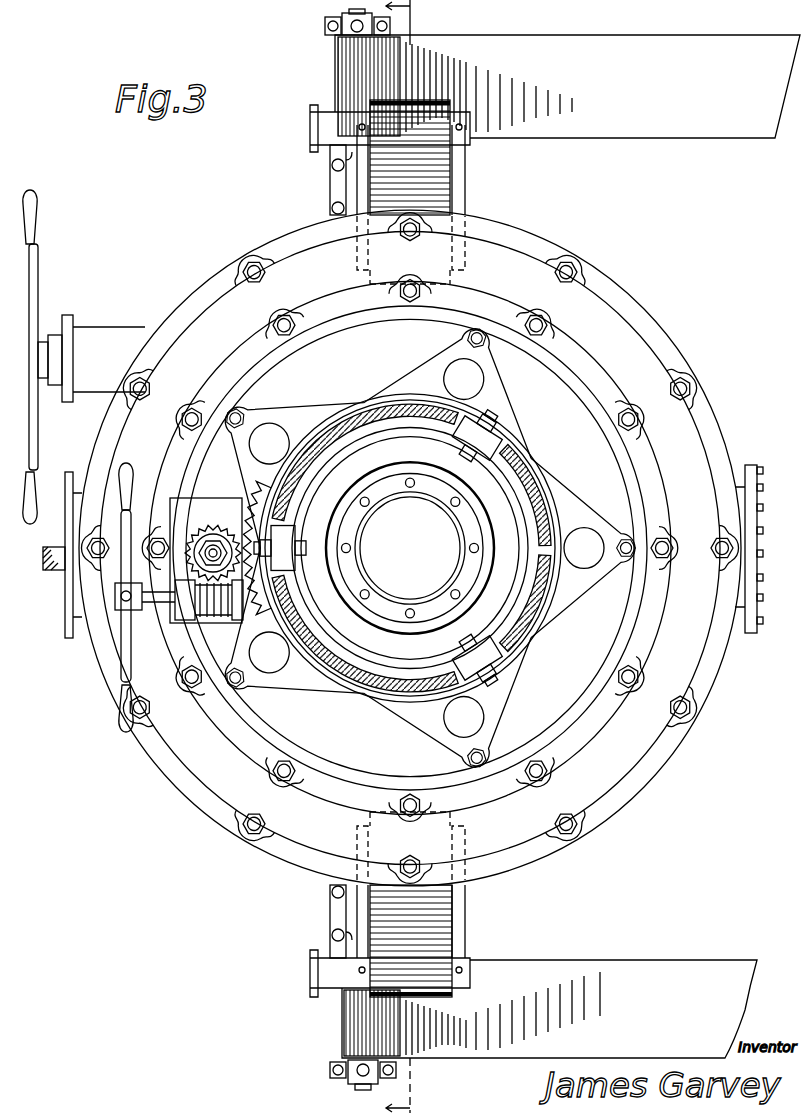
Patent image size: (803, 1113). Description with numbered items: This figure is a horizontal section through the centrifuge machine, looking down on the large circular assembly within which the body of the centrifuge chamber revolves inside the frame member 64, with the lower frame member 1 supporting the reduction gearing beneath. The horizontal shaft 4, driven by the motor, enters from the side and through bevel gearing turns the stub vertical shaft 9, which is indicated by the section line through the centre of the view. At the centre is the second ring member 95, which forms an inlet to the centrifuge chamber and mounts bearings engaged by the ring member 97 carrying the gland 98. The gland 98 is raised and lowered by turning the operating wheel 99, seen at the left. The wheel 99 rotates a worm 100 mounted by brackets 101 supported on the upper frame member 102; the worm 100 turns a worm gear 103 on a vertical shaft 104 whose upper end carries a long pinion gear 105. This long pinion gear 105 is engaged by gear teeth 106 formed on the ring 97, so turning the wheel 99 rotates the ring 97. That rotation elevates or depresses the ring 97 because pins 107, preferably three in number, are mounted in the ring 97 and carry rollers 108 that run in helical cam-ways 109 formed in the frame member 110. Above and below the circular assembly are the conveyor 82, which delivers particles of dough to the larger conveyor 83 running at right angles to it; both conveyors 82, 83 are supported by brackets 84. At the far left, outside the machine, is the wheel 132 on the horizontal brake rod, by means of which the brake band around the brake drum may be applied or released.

The lower frame member 1 is at (722, 452).
The horizontal shaft 4 is at (55, 565).
The stub vertical shaft 9 is at (423, 556).
The frame member 64 is at (640, 345).
The conveyor 82 is at (440, 191).
The larger conveyor 83 is at (603, 118).
The brackets 84 is at (343, 187).
The second ring member 95 is at (460, 532).
The ring member 97 is at (545, 500).
The gland 98 is at (389, 452).
The operating wheel 99 is at (118, 650).
The worm 100 is at (215, 620).
The brackets 101 is at (203, 496).
The upper frame member 102 is at (645, 648).
The worm gear 103 is at (215, 530).
The vertical shaft 104 is at (207, 537).
The long pinion gear 105 is at (160, 540).
The gear teeth 106 is at (250, 498).
The pins 107 is at (490, 405).
The rollers 108 is at (497, 412).
The helical cam-ways 109 is at (335, 432).
The frame member 110 is at (545, 612).
The wheel 132 is at (35, 287).